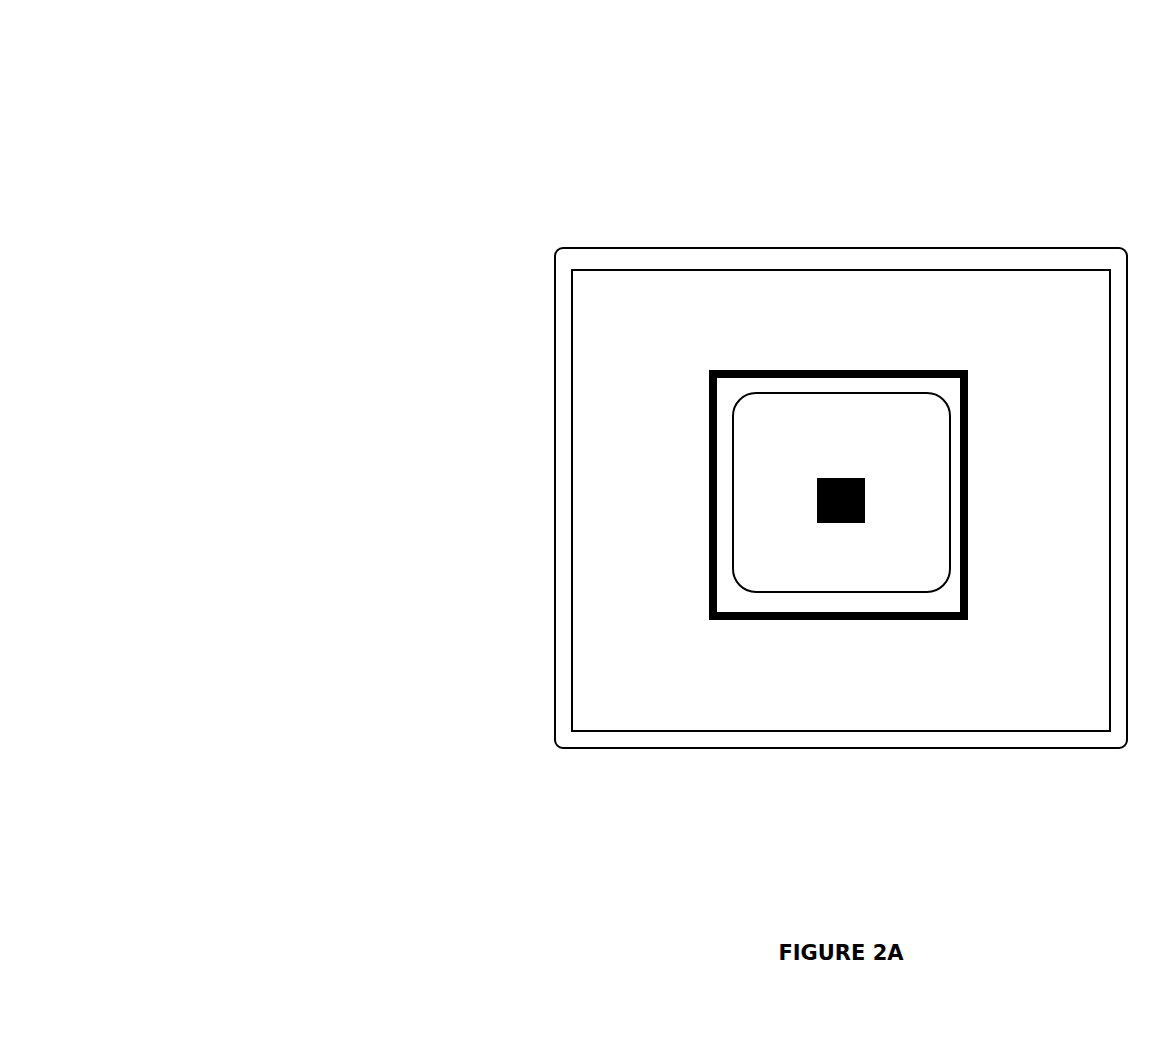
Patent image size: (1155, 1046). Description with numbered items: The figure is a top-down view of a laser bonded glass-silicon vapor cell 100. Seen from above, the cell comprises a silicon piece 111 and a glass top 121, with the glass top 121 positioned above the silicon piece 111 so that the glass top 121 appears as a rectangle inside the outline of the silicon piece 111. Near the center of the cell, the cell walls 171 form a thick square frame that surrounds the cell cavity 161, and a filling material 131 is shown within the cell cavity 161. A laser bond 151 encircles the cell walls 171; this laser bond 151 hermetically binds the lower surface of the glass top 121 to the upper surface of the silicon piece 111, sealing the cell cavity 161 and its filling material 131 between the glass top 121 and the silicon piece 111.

The laser bonded glass-silicon vapor cell 100 is at (276, 64).
The silicon piece 111 is at (555, 363).
The glass top 121 is at (877, 268).
The filling material 131 is at (847, 478).
The laser bond 151 is at (709, 572).
The cell cavity 161 is at (912, 570).
The cell walls 171 is at (777, 592).